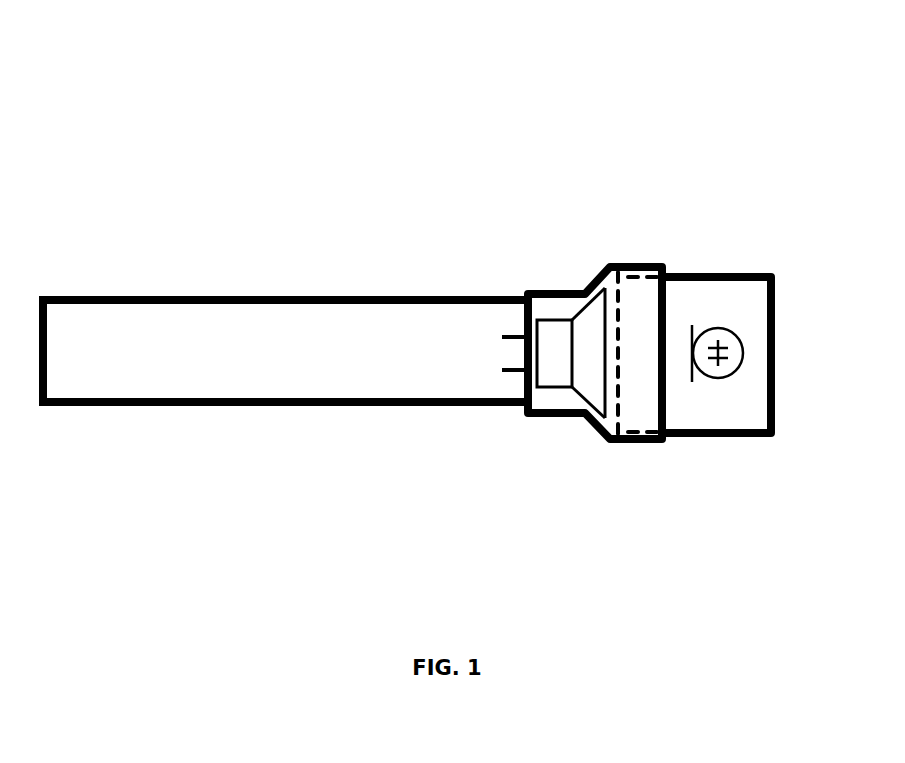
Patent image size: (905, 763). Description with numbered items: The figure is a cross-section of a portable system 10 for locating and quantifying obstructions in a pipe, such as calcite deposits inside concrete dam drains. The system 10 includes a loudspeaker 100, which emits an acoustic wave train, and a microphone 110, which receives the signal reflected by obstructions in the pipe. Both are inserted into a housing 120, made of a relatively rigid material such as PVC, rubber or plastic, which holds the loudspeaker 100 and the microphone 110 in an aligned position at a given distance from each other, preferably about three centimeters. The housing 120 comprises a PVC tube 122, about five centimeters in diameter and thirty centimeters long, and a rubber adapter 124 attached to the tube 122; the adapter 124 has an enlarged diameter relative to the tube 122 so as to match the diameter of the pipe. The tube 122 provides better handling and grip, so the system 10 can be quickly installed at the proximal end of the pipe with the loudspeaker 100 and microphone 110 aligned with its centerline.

The portable system 10 is at (681, 226).
The loudspeaker 100 is at (557, 397).
The microphone 110 is at (719, 407).
The housing 120 is at (531, 266).
The PVC tube 122 is at (256, 296).
The rubber adapter 124 is at (582, 281).